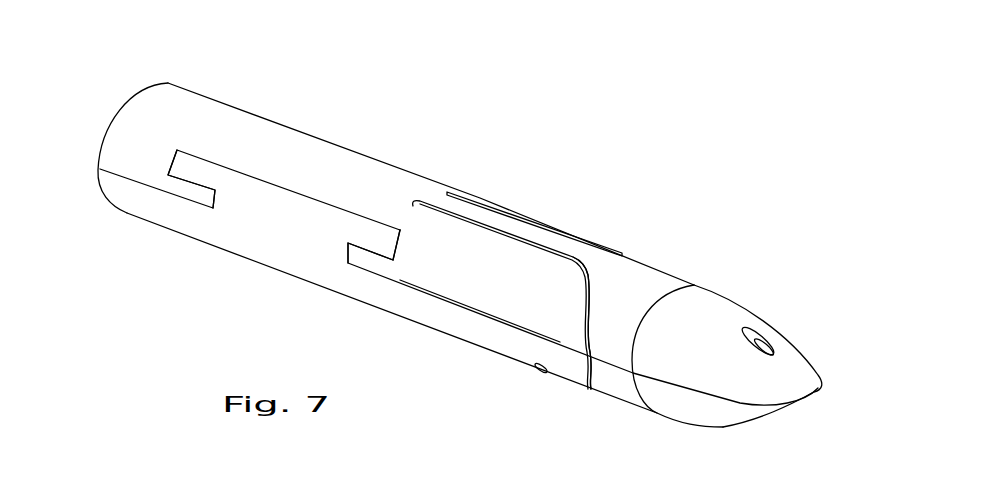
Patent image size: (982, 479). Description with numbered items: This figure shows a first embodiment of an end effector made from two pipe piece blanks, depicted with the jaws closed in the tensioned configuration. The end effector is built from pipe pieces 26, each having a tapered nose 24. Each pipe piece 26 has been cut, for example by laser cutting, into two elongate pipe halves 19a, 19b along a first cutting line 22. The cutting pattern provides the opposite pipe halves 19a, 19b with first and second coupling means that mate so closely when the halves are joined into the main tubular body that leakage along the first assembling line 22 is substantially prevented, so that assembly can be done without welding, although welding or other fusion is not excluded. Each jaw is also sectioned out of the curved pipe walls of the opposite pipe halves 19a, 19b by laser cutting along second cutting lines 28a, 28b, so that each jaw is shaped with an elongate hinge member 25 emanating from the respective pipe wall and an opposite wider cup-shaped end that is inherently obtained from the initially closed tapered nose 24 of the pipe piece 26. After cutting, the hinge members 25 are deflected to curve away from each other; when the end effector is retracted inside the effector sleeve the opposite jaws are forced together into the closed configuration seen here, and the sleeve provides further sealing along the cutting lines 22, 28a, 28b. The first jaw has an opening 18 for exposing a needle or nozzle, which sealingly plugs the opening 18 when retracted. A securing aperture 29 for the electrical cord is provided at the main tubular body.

The pipe piece 26 is at (104, 104).
The first elongate pipe half 19a is at (232, 117).
The second elongate pipe half 19b is at (255, 252).
The first cutting line 22 is at (460, 303).
The elongate hinge member 25 is at (475, 220).
The second cutting line 28a is at (540, 218).
The second cutting line 28b is at (587, 268).
The tapered nose 24 is at (708, 293).
The opening 18 is at (765, 343).
The securing aperture 29 is at (540, 377).